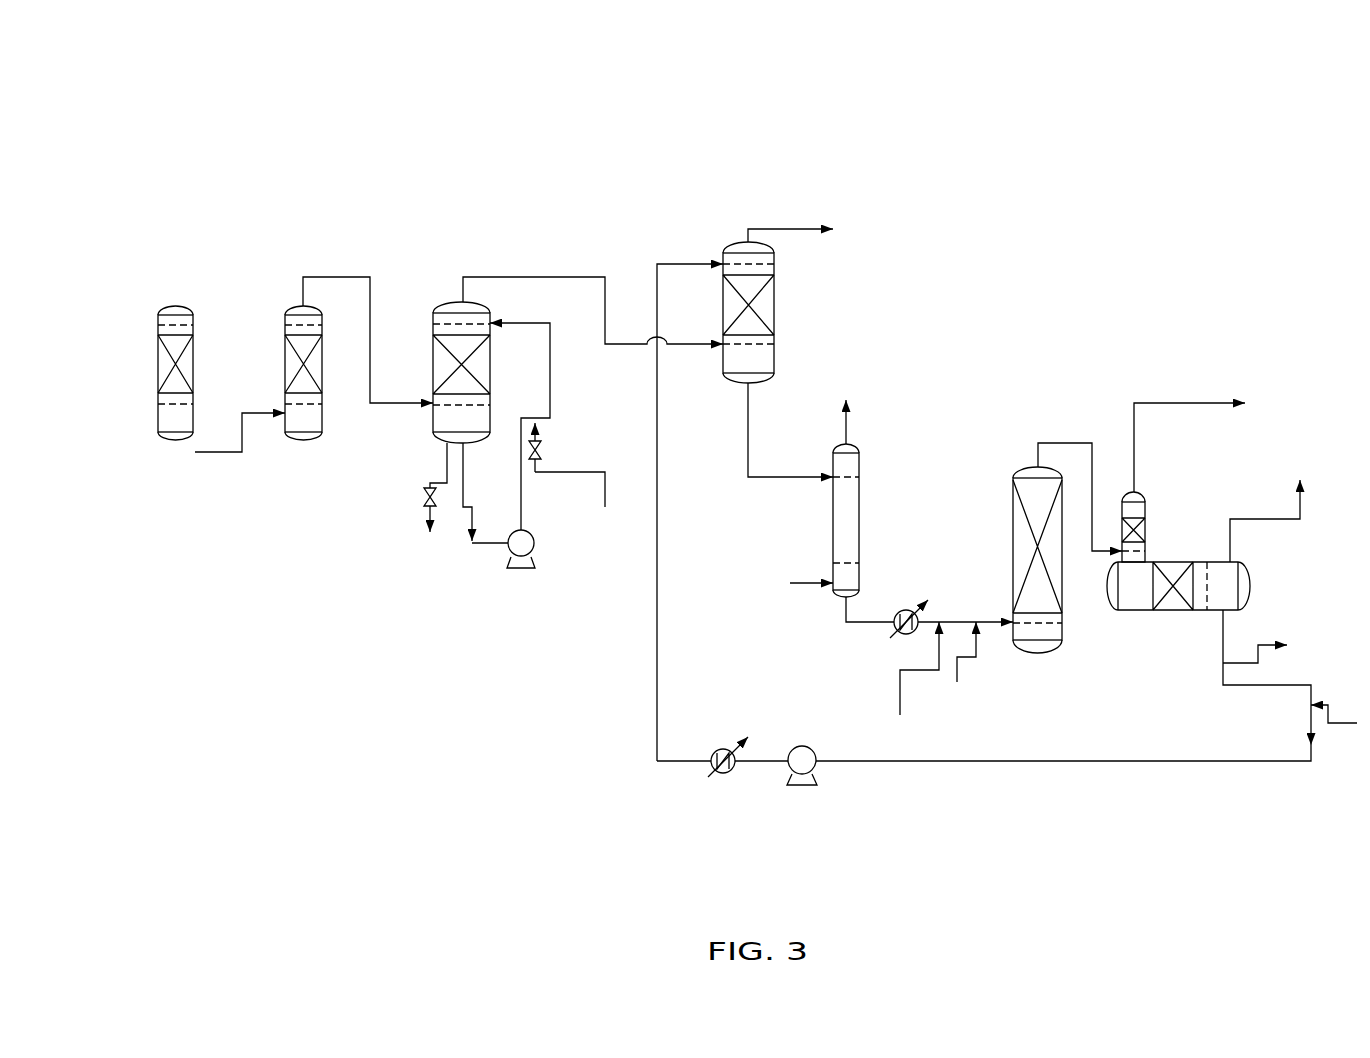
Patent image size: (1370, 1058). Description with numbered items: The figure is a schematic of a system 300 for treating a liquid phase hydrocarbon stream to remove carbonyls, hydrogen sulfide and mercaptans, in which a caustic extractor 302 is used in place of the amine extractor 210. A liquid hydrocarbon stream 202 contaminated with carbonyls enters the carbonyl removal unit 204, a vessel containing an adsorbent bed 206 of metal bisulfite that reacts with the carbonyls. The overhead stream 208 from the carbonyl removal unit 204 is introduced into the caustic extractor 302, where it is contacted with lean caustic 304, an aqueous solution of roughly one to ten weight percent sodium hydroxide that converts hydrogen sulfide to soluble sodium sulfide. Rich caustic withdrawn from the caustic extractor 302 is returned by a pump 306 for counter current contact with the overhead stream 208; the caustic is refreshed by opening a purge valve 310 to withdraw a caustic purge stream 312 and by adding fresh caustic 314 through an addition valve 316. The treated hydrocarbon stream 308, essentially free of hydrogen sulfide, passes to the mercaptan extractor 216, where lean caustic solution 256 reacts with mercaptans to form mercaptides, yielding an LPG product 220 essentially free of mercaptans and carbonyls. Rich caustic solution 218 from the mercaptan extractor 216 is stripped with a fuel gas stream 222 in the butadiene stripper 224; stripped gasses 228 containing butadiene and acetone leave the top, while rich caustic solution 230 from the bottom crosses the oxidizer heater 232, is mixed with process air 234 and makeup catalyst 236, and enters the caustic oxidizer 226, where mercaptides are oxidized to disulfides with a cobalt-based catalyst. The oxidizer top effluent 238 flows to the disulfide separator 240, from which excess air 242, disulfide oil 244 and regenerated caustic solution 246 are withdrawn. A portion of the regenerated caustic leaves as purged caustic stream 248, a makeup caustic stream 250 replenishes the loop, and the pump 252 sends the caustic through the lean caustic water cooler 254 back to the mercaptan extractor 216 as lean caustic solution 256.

The system 300 is at (588, 83).
The liquid hydrocarbon stream 202 is at (207, 453).
The carbonyl removal unit 204 is at (307, 443).
The adsorbent bed 206 is at (282, 373).
The overhead stream 208 is at (335, 265).
The amine extractor 210 is at (157, 417).
The mercaptan extractor 216 is at (727, 313).
The rich caustic solution 218 is at (743, 430).
The LPG product 220 is at (775, 220).
The fuel gas stream 222 is at (798, 575).
The butadiene stripper 224 is at (827, 518).
The caustic oxidizer 226 is at (1007, 520).
The stripped gasses 228 is at (840, 430).
The rich caustic solution 230 is at (855, 630).
The oxidizer heater 232 is at (907, 612).
The process air 234 is at (895, 693).
The makeup catalyst 236 is at (960, 672).
The oxidizer top effluent 238 is at (1063, 435).
The disulfide separator 240 is at (1132, 617).
The excess air 242 is at (1160, 395).
The disulfide oil 244 is at (1255, 513).
The regenerated caustic solution 246 is at (1217, 642).
The purged caustic stream 248 is at (1277, 620).
The makeup caustic stream 250 is at (1347, 667).
The pump 252 is at (797, 748).
The lean caustic water cooler 254 is at (723, 748).
The lean caustic solution 256 is at (690, 257).
The caustic extractor 302 is at (433, 372).
The lean caustic 304 is at (547, 297).
The pump 306 is at (515, 578).
The treated hydrocarbon stream 308 is at (488, 268).
The purge valve 310 is at (427, 490).
The caustic purge stream 312 is at (425, 510).
The fresh caustic 314 is at (602, 488).
The addition valve 316 is at (545, 442).